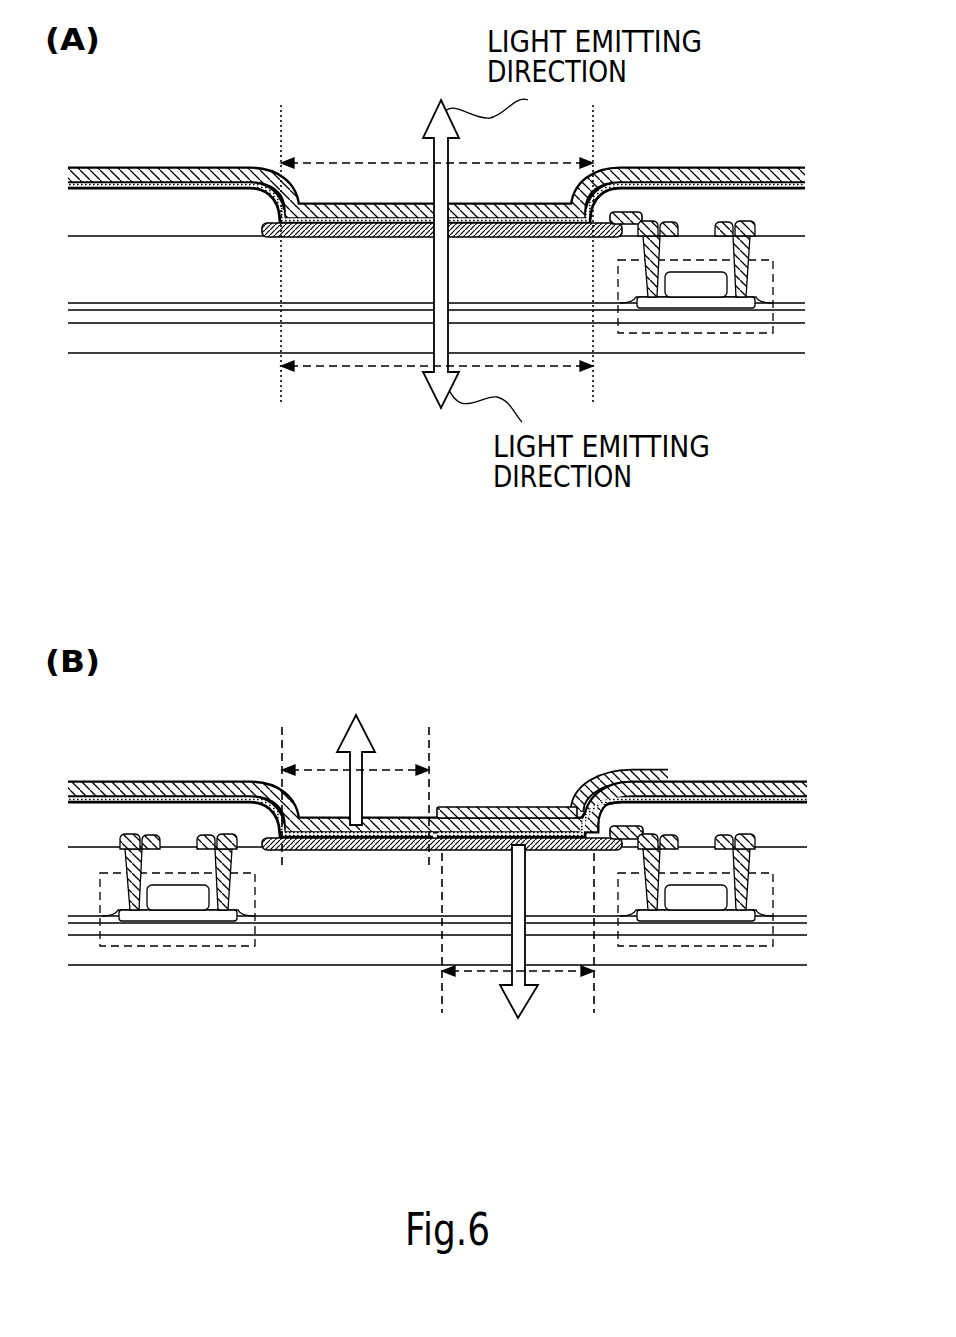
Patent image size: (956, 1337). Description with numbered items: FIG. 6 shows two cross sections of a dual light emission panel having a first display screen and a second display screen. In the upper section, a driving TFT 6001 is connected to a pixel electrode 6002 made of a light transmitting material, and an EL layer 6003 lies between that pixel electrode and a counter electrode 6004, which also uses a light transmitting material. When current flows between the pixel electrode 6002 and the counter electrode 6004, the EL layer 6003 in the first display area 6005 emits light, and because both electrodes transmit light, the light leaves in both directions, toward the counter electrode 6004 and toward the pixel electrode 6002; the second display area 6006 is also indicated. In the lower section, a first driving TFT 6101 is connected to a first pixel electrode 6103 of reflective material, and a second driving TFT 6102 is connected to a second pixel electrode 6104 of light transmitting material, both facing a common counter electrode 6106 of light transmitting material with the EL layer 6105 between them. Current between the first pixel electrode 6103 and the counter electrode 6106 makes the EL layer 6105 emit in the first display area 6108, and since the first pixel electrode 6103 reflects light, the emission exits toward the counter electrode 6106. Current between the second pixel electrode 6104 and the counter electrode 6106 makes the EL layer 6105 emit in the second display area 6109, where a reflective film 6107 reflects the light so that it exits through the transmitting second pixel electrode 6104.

The driving TFT 6001 is at (750, 333).
The pixel electrode 6002 is at (325, 237).
The EL layer 6003 is at (658, 182).
The counter electrode 6004 is at (190, 168).
The first display area 6005 is at (357, 162).
The second display area 6006 is at (337, 368).
The first driving TFT 6101 is at (203, 948).
The second driving TFT 6102 is at (738, 947).
The first pixel electrode 6103 is at (373, 850).
The second pixel electrode 6104 is at (483, 823).
The EL layer 6105 is at (760, 782).
The counter electrode 6106 is at (140, 782).
The reflective film 6107 is at (483, 832).
The first display area 6108 is at (300, 745).
The second display area 6109 is at (553, 972).